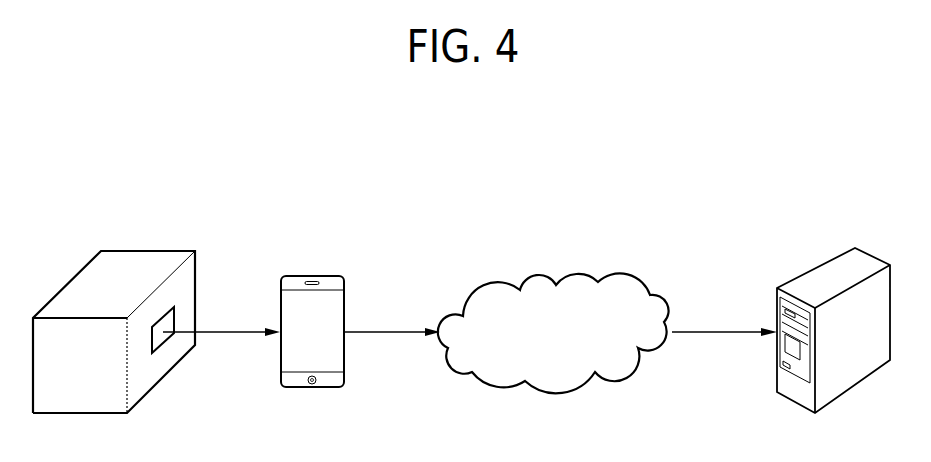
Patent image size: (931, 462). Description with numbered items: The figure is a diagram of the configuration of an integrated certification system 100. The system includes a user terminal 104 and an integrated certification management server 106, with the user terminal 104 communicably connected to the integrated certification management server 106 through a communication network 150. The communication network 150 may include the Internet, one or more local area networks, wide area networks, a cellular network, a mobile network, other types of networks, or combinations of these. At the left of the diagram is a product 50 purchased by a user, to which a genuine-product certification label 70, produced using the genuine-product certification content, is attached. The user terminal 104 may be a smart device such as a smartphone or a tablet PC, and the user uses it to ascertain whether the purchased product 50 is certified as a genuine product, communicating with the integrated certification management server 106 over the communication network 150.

The integrated certification system 100 is at (35, 128).
The product 50 is at (143, 250).
The genuine-product certification label 70 is at (158, 340).
The user terminal 104 is at (313, 273).
The communication network 150 is at (575, 280).
The integrated certification management server 106 is at (823, 272).